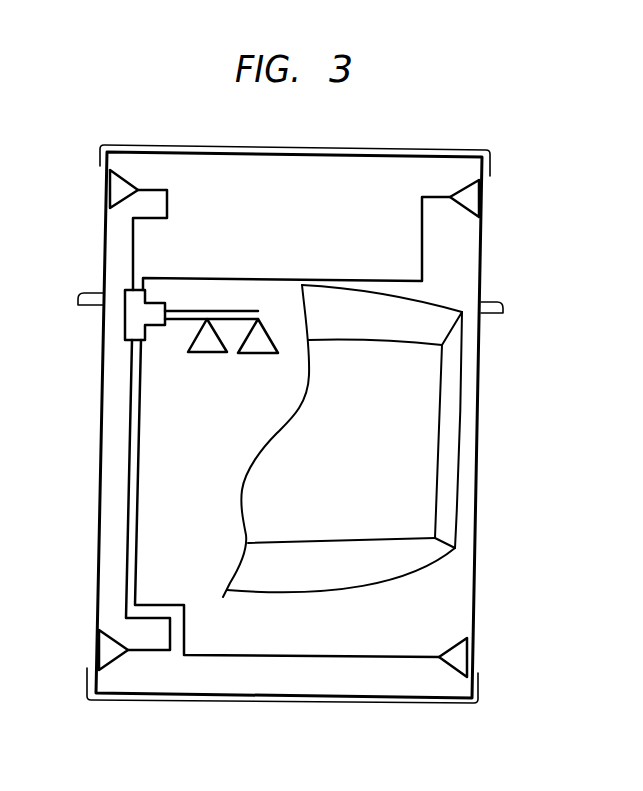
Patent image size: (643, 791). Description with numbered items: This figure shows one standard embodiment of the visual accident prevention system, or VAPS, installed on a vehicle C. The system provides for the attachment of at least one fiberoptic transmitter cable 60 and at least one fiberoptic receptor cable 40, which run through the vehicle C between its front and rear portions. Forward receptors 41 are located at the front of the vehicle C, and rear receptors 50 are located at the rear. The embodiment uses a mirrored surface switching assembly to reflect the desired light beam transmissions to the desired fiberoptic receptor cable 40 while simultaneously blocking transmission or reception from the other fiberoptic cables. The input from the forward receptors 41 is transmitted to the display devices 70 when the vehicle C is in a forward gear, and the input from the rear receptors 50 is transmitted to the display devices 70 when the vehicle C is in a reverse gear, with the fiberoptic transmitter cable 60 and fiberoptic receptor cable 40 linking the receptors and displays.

The vehicle C is at (448, 140).
The fiberoptic receptor cable 40 is at (167, 203).
The forward receptors 41 is at (112, 186).
The rear receptors 50 is at (104, 650).
The fiberoptic transmitter cable 60 is at (133, 441).
The display devices 70 is at (206, 353).